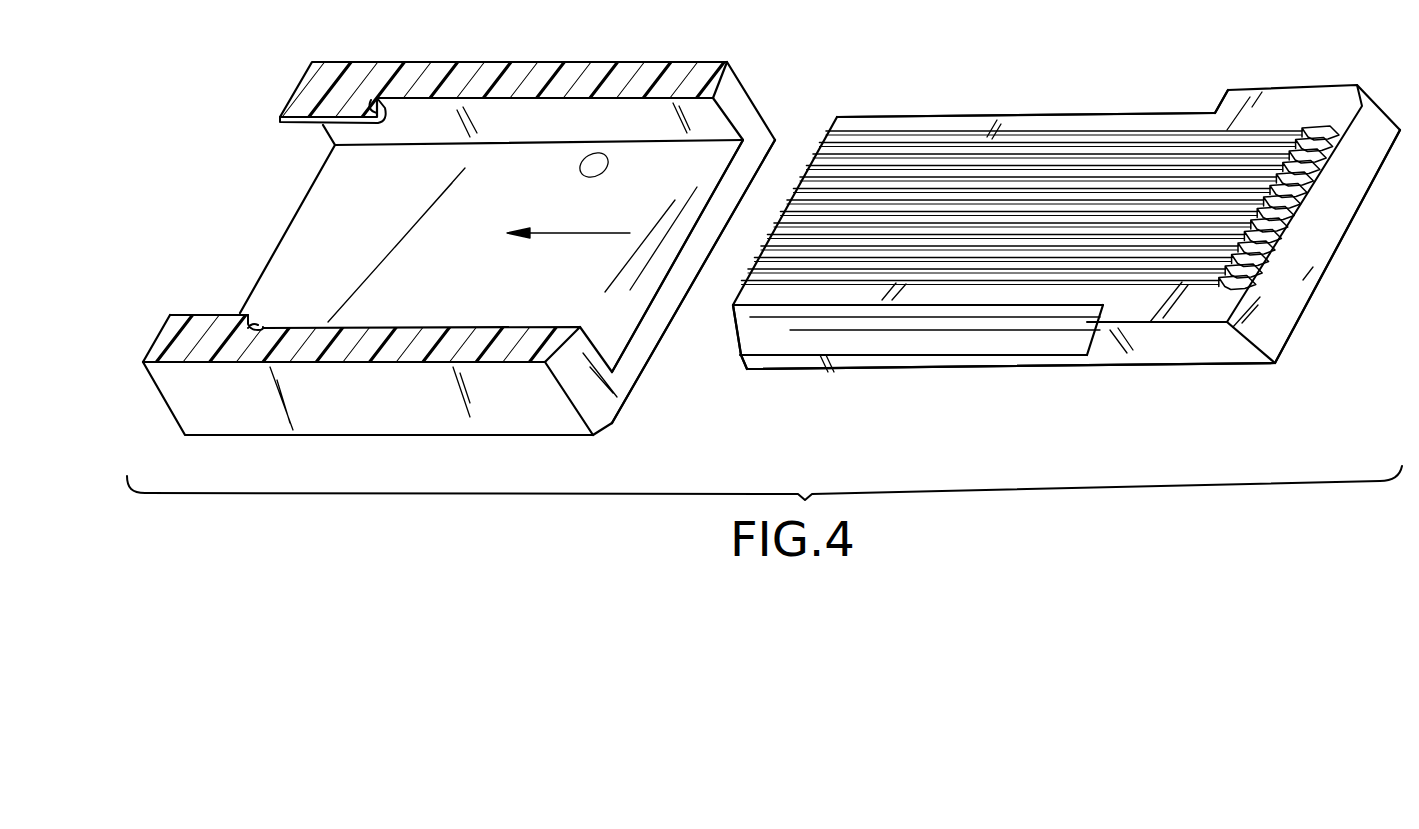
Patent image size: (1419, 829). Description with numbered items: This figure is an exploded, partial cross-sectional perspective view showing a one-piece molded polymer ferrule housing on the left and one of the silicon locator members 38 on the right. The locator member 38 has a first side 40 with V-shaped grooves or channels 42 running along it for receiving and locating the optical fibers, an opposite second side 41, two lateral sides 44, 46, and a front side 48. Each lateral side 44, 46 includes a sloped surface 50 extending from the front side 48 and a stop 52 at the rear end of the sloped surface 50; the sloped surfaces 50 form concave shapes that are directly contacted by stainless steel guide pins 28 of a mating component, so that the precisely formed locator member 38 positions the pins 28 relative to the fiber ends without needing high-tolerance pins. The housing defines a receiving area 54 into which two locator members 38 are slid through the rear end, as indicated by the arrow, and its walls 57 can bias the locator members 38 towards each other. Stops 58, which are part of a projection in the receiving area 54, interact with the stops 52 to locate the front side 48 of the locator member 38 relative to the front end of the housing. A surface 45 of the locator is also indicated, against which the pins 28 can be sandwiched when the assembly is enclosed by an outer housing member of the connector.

The pins 28 is at (547, 74).
The locator member 38 is at (1200, 373).
The first side 40 is at (1291, 107).
The second side 41 is at (1305, 313).
The channels 42 is at (883, 150).
The lateral side 44 is at (1057, 113).
The surface 45 is at (951, 118).
The lateral side 46 is at (1004, 368).
The front side 48 is at (735, 335).
The sloped surface 50 is at (1001, 120).
The stop 52 is at (1218, 102).
The receiving area 54 is at (318, 213).
The walls 57 is at (657, 323).
The stops 58 is at (371, 106).